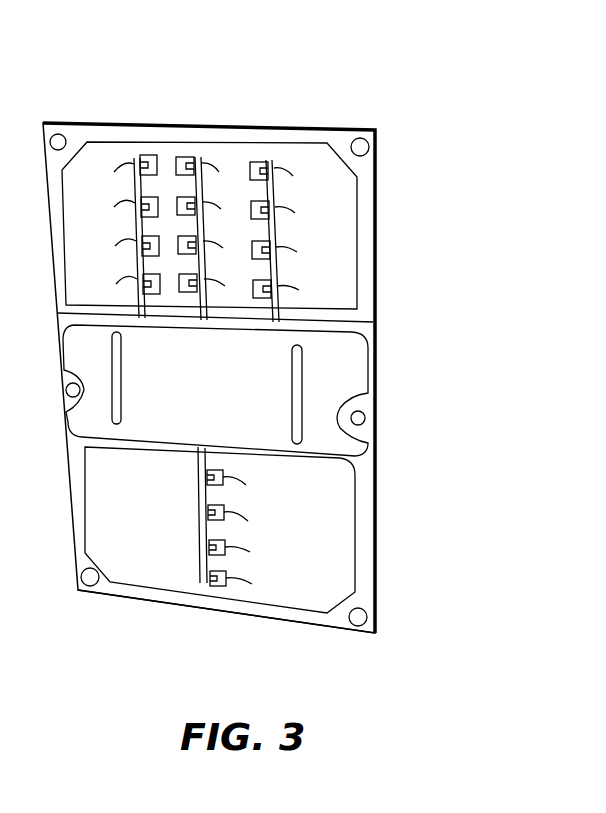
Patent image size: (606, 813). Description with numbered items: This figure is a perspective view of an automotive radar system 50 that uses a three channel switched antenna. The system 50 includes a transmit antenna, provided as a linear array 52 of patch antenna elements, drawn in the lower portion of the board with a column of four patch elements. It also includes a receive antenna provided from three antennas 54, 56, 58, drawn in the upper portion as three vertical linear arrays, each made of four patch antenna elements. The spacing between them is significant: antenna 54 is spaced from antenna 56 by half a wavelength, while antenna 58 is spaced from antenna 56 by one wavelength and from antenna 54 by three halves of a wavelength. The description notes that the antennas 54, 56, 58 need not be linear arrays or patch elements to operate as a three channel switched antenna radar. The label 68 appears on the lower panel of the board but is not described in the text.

The automotive radar system 50 is at (462, 160).
The linear array 52 is at (220, 630).
The antenna 54 is at (138, 118).
The antenna 56 is at (186, 117).
The antenna 58 is at (267, 117).
The lower panel region 68 is at (340, 508).